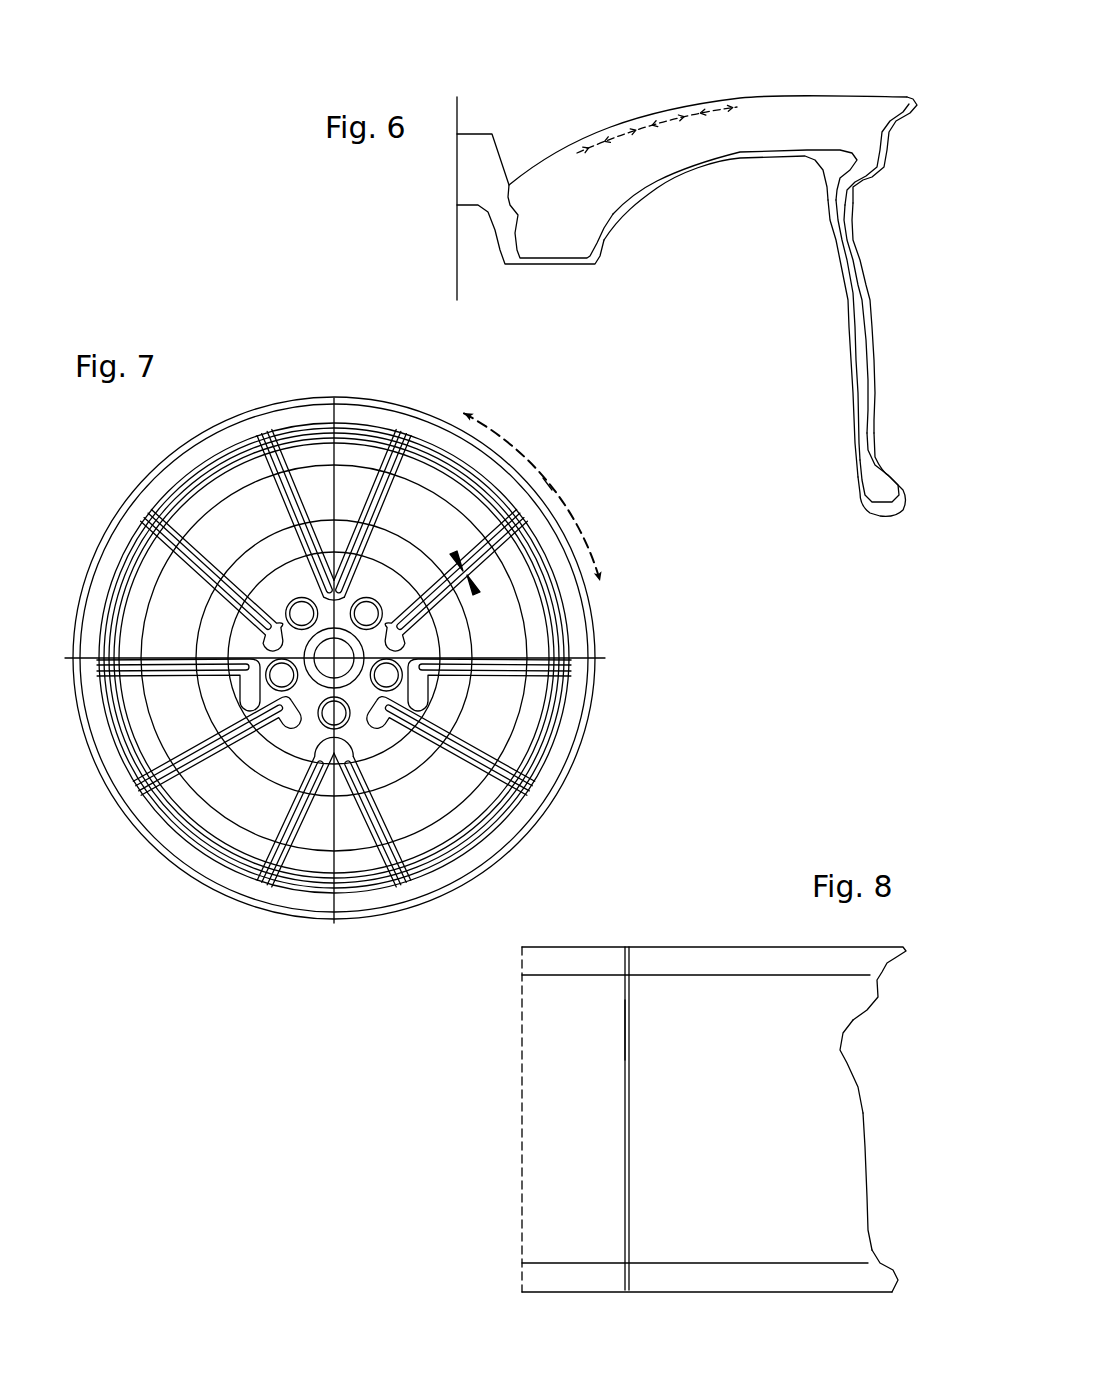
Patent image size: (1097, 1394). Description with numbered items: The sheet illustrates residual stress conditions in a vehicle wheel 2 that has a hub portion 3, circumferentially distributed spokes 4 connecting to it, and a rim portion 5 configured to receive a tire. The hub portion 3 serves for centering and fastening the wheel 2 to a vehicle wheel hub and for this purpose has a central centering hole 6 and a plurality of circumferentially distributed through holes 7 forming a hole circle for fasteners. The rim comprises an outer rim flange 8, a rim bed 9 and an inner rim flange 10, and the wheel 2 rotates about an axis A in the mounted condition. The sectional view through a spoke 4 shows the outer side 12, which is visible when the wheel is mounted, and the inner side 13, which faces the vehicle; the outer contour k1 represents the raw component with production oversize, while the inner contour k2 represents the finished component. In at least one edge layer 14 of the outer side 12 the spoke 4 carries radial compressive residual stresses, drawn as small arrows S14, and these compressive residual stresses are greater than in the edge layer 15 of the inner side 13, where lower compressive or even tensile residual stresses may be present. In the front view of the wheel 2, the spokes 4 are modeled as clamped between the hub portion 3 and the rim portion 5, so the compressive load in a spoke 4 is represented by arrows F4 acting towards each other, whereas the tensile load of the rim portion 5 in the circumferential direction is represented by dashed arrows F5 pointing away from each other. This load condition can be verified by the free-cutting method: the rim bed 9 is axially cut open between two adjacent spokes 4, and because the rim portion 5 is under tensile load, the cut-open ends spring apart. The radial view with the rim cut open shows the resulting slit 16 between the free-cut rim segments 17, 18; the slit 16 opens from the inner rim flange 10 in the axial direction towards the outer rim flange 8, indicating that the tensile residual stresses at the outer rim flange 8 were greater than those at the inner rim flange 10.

In FIG. 6, the wheel 2 is at (710, 365).
In FIG. 7, the wheel 2 is at (682, 655).
In FIG. 8, the wheel 2 is at (476, 1033).
In FIG. 6, the hub portion 3 is at (476, 130).
In FIG. 7, the hub portion 3 is at (315, 699).
In FIG. 6, the spoke 4 is at (662, 163).
In FIG. 7, the spoke 4 is at (289, 493).
In FIG. 6, the rim portion 5 is at (883, 338).
In FIG. 7, the rim portion 5 is at (603, 737).
In FIG. 8, the rim portion 5 is at (850, 1158).
In FIG. 7, the central centering hole 6 is at (342, 676).
In FIG. 7, the through holes 7 is at (286, 684).
In FIG. 6, the outer rim flange 8 is at (912, 100).
In FIG. 7, the outer rim flange 8 is at (197, 452).
In FIG. 8, the outer rim flange 8 is at (728, 948).
In FIG. 8, the rim bed 9 is at (862, 1095).
In FIG. 6, the inner rim flange 10 is at (904, 498).
In FIG. 8, the inner rim flange 10 is at (883, 1282).
In FIG. 6, the outer side 12 is at (594, 92).
In FIG. 8, the outer side 12 is at (680, 908).
In FIG. 6, the inner side 13 is at (672, 302).
In FIG. 8, the inner side 13 is at (717, 1324).
In FIG. 6, the edge layer of the outer side 14 is at (658, 95).
In FIG. 6, the compressive residual stresses S14 is at (703, 107).
In FIG. 6, the edge layer of the inner side 15 is at (708, 173).
In FIG. 8, the slit 16 is at (628, 946).
In FIG. 8, the free-cut rim segment 17 is at (628, 1058).
In FIG. 8, the free-cut rim segment 18 is at (626, 1027).
In FIG. 6, the outer contour k1 is at (875, 395).
In FIG. 6, the inner contour k2 is at (866, 353).
In FIG. 8, the axis A is at (520, 1143).
In FIG. 7, the compressive load arrows F4 is at (468, 577).
In FIG. 7, the tensile load arrows F5 is at (533, 495).